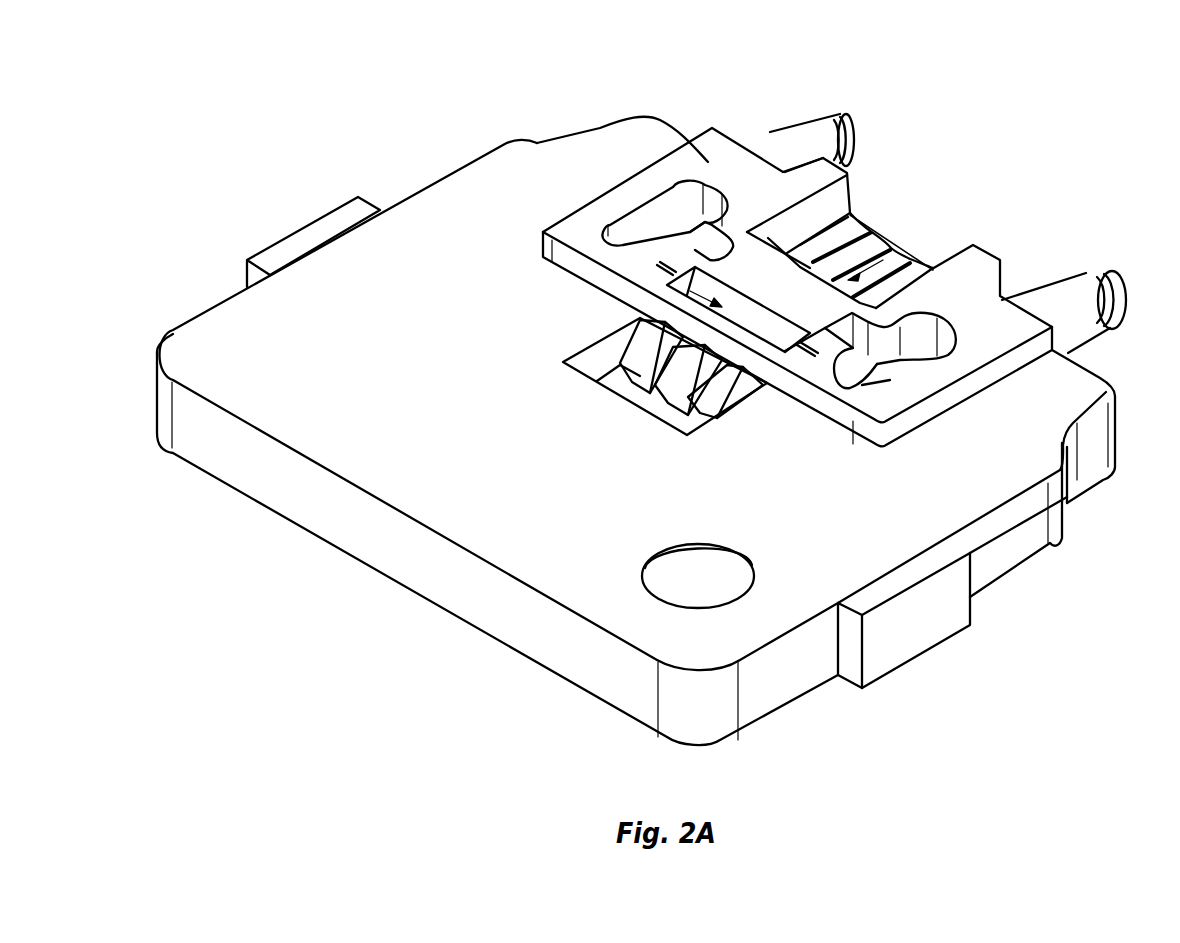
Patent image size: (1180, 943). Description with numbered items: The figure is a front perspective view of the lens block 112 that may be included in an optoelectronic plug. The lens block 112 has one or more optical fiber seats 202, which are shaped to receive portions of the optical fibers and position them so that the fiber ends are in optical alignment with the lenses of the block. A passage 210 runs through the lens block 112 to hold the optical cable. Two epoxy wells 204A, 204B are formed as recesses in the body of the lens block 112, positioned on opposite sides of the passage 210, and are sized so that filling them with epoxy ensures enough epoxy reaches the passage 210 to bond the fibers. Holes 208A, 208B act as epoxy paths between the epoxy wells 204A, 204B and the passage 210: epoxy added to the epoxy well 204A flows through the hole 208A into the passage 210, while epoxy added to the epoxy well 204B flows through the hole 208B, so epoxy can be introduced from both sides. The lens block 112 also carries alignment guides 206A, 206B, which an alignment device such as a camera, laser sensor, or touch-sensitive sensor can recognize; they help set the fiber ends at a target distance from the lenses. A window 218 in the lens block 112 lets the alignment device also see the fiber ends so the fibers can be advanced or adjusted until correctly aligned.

The lens block 112 is at (322, 82).
The optical fiber seats 202 is at (855, 236).
The epoxy well 204A is at (672, 205).
The epoxy well 204B is at (922, 334).
The alignment guide 206A is at (706, 246).
The alignment guide 206B is at (855, 378).
The hole 208A is at (700, 246).
The hole 208B is at (866, 341).
The passage 210 is at (933, 267).
The window 218 is at (700, 295).